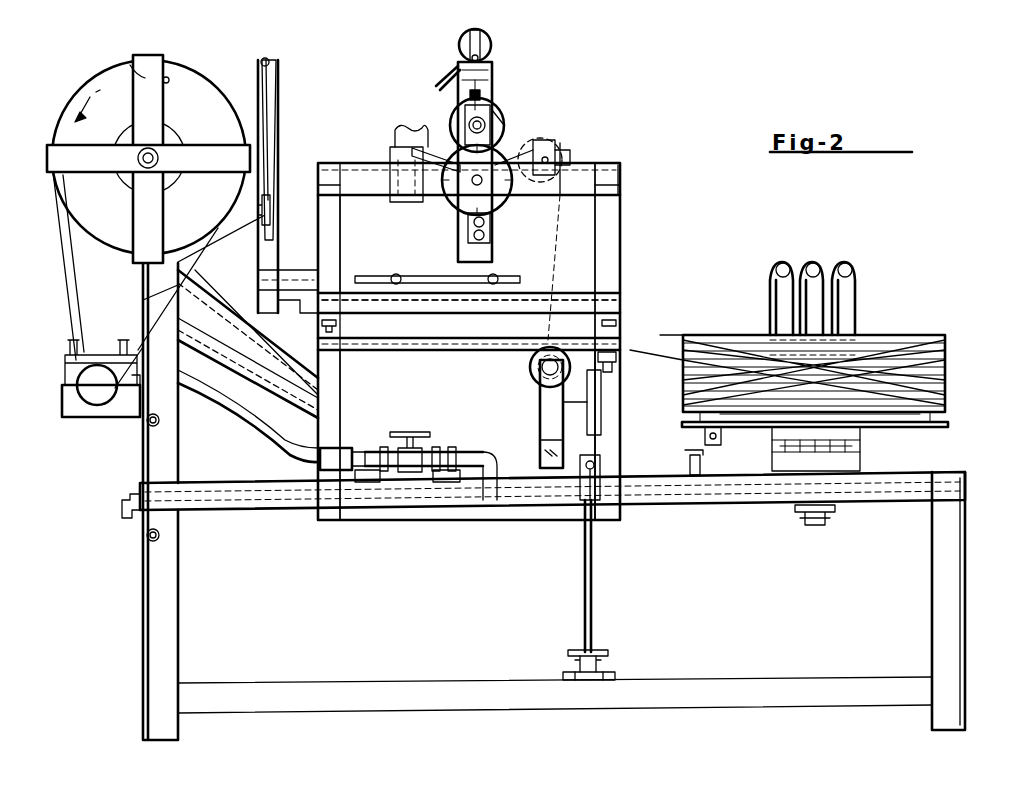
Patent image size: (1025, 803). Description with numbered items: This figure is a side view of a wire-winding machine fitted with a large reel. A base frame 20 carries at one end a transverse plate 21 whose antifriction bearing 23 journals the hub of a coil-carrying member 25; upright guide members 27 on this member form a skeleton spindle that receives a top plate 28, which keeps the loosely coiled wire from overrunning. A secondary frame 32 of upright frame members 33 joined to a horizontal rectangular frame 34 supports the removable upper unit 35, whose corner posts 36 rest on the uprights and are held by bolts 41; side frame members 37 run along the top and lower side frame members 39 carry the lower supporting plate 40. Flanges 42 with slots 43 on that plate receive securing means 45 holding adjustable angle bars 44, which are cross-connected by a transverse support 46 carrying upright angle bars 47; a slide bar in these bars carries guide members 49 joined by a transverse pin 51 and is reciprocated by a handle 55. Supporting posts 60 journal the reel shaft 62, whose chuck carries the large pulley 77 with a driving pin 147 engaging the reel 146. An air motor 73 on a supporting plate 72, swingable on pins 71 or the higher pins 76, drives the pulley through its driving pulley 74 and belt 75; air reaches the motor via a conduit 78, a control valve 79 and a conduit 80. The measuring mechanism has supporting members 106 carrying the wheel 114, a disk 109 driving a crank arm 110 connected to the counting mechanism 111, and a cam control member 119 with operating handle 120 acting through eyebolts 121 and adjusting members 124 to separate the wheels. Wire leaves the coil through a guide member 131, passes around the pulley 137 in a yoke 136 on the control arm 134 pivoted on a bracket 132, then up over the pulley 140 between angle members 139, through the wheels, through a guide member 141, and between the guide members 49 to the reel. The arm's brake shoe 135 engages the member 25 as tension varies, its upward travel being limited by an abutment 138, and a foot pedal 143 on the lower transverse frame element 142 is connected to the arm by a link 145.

The base frame 20 is at (924, 594).
The transverse plate 21 is at (950, 472).
The antifriction bearing 23 is at (860, 455).
The coil-carrying member 25 is at (945, 428).
The upright guide members 27 is at (795, 268).
The top plate 28 is at (900, 336).
The secondary frame 32 is at (354, 384).
The upright frame members 33 is at (610, 400).
The horizontal rectangular frame 34 is at (400, 345).
The upper unit 35 is at (628, 180).
The corner posts 36 is at (610, 232).
The side frame members 37 is at (580, 178).
The lower side frame members 39 is at (605, 296).
The lower supporting plate 40 is at (515, 305).
The bolt 41 is at (618, 316).
The flange 42 is at (382, 280).
The slot 43 is at (410, 278).
The angle bars 44 is at (298, 287).
The securing means 45 is at (500, 270).
The transverse support 46 is at (280, 308).
The upright angle bars 47 is at (270, 250).
The guide members 49 is at (273, 100).
The transverse pin 51 is at (270, 62).
The handle 55 is at (276, 185).
The supporting posts 60 is at (155, 462).
The reel shaft 62 is at (130, 188).
The supporting pins 71 is at (162, 540).
The supporting plate 72 is at (105, 417).
The air motor 73 is at (54, 415).
The driving pulley 74 is at (96, 370).
The driving belt 75 is at (60, 262).
The supporting pins 76 is at (162, 422).
The pulley 77 is at (175, 70).
The conduit 78 is at (122, 505).
The control valve 79 is at (418, 450).
The conduit 80 is at (270, 445).
The supporting members 106 is at (492, 238).
The disk 109 is at (452, 205).
The crank arm 110 is at (430, 148).
The counting mechanism 111 is at (388, 158).
The wheel 114 is at (452, 118).
The control member 119 is at (488, 40).
The operating handle 120 is at (440, 72).
The eyebolt 121 is at (492, 62).
The adjusting member 124 is at (495, 120).
The guide member 131 is at (618, 340).
The bracket 132 is at (700, 470).
The control arm 134 is at (620, 463).
The brake shoe 135 is at (716, 440).
The yoke 136 is at (540, 405).
The pulley 137 is at (528, 372).
The abutment 138 is at (585, 418).
The angle members 139 is at (556, 145).
The pulley 140 is at (536, 145).
The guide member 141 is at (398, 122).
The lower transverse frame element 142 is at (580, 680).
The foot pedal 143 is at (595, 648).
The link 145 is at (590, 570).
The reel 146 is at (135, 72).
The driving pin 147 is at (170, 80).